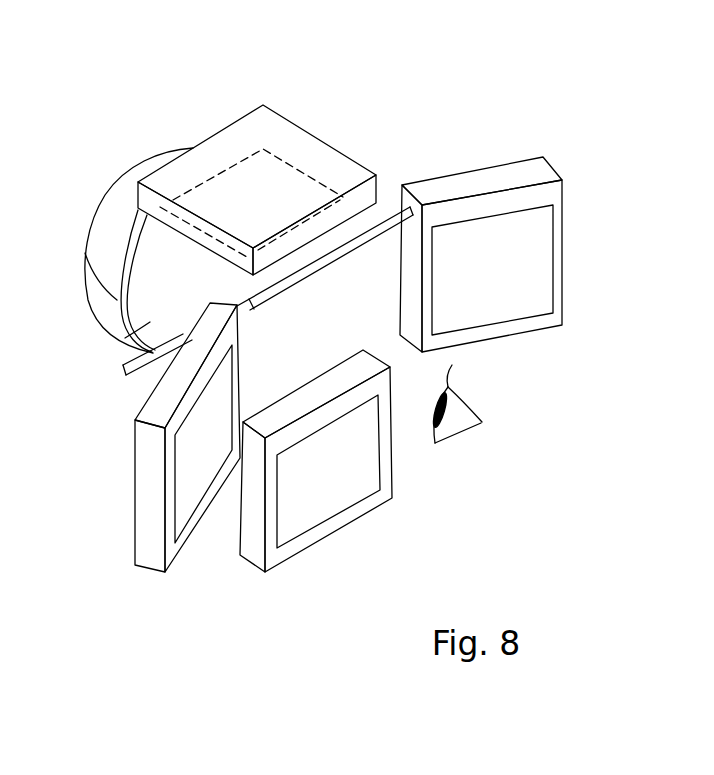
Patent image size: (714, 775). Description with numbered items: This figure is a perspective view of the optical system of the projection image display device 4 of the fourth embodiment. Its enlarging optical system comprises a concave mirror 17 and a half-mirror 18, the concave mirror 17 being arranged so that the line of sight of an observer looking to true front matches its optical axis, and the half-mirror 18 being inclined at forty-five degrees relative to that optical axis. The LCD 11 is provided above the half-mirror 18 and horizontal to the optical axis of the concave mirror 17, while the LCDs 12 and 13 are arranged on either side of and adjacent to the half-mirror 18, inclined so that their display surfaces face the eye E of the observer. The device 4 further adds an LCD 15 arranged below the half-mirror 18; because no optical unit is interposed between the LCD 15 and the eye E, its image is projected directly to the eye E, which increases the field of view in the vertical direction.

The projection image display device 4 is at (344, 347).
The LCD 11 is at (275, 177).
The LCD 12 is at (183, 497).
The LCD 13 is at (530, 258).
The LCD 15 is at (325, 500).
The concave mirror 17 is at (127, 340).
The half-mirror 18 is at (340, 257).
The eye E is at (460, 433).